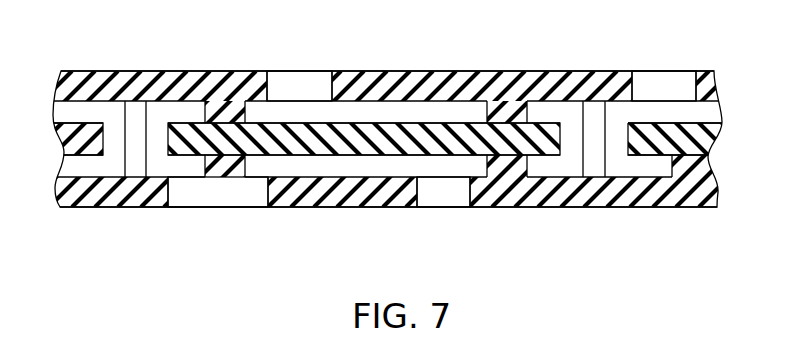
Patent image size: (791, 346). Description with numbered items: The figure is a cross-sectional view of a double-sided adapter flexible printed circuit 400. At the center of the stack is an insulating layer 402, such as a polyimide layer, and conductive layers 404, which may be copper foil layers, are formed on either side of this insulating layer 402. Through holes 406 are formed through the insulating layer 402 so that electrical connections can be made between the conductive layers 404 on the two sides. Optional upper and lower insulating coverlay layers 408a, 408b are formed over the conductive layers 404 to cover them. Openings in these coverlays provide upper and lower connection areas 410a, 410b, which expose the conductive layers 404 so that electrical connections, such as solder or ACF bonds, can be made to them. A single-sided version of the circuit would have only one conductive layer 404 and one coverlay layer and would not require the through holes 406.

The double-sided adapter flexible printed circuit 400 is at (108, 224).
The insulating layer 402 is at (701, 137).
The conductive layers 404 is at (713, 113).
The through holes 406 is at (132, 113).
The upper insulating coverlay layer 408a is at (567, 77).
The lower insulating coverlay layer 408b is at (515, 200).
The upper connection area 410a is at (300, 82).
The lower connection area 410b is at (186, 198).